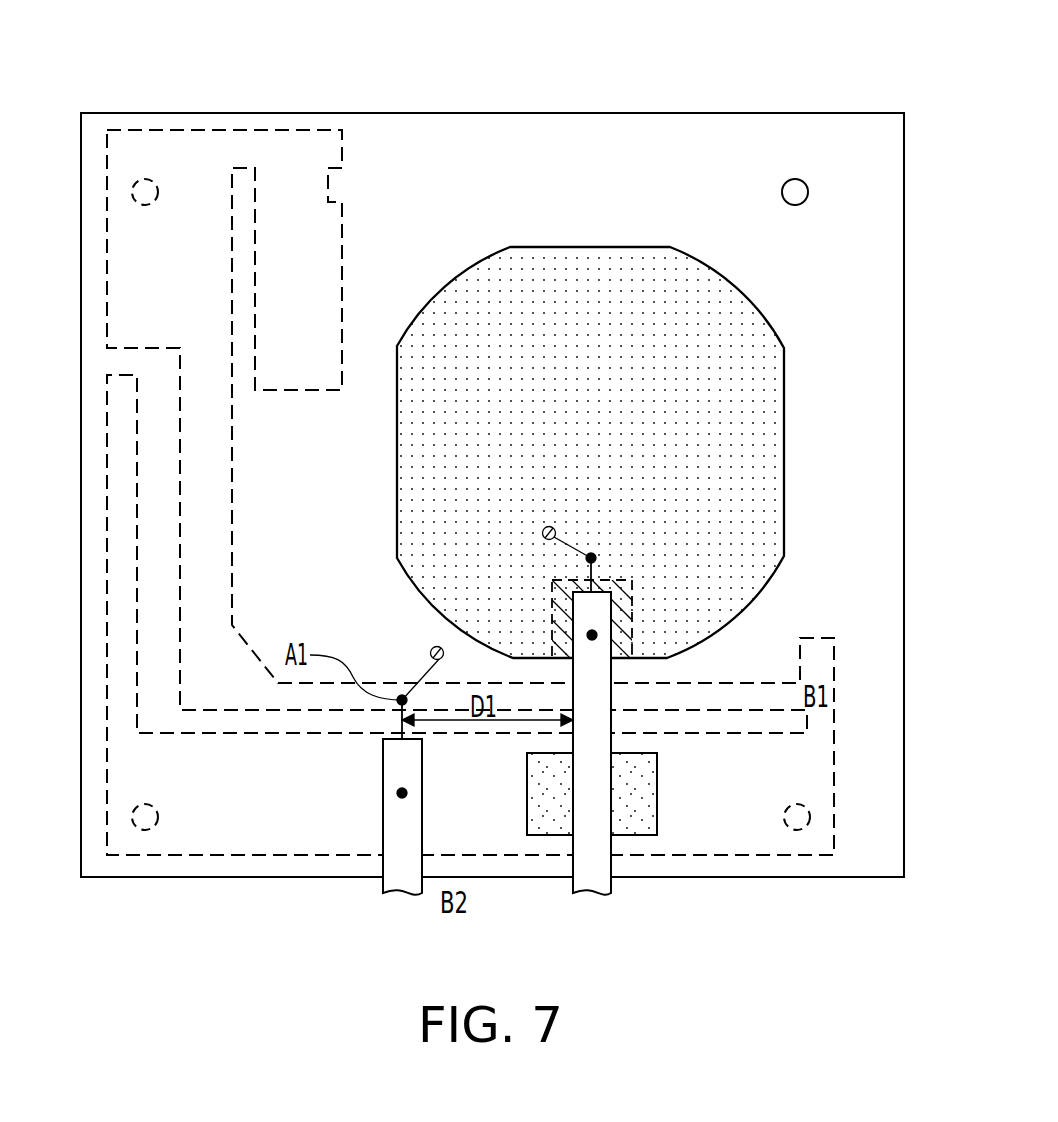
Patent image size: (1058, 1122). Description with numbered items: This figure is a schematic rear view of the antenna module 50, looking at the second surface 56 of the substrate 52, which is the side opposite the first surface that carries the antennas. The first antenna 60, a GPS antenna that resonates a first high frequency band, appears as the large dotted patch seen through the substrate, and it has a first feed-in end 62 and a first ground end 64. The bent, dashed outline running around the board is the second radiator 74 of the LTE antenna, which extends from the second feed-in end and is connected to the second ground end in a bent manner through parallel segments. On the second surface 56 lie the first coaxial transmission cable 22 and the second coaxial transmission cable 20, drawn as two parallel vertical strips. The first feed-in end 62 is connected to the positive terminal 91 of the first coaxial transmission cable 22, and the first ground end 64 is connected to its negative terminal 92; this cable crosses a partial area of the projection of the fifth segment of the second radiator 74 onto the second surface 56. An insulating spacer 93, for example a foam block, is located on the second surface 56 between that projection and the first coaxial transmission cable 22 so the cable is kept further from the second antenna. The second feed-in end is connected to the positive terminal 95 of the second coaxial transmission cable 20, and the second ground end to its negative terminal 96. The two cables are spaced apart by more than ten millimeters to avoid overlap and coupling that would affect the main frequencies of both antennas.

The antenna module 50 is at (475, 443).
The second surface 56 is at (492, 459).
The substrate 52 is at (527, 163).
The first antenna 60 is at (784, 410).
The first feed-in end 62 is at (591, 559).
The first ground end 64 is at (552, 632).
The second radiator 74 is at (780, 854).
The positive terminal 91 is at (591, 574).
The negative terminal 92 is at (592, 636).
The first coaxial transmission cable 22 is at (714, 721).
The insulating spacer 93 is at (657, 793).
The positive terminal 95 is at (402, 720).
The negative terminal 96 is at (402, 793).
The second coaxial transmission cable 20 is at (332, 812).